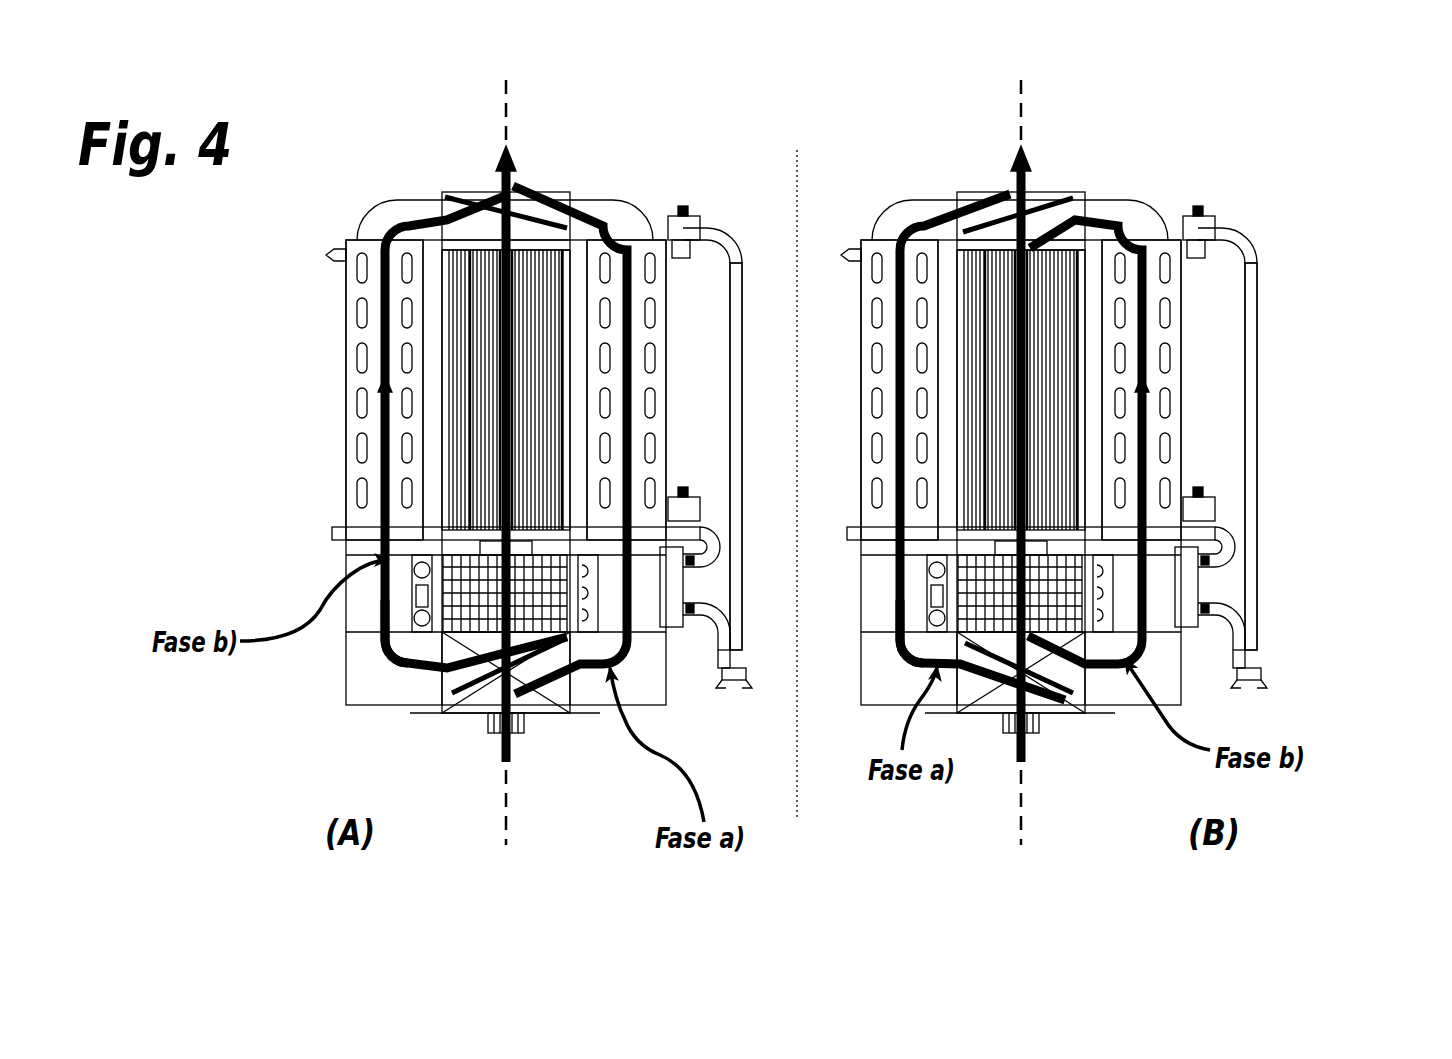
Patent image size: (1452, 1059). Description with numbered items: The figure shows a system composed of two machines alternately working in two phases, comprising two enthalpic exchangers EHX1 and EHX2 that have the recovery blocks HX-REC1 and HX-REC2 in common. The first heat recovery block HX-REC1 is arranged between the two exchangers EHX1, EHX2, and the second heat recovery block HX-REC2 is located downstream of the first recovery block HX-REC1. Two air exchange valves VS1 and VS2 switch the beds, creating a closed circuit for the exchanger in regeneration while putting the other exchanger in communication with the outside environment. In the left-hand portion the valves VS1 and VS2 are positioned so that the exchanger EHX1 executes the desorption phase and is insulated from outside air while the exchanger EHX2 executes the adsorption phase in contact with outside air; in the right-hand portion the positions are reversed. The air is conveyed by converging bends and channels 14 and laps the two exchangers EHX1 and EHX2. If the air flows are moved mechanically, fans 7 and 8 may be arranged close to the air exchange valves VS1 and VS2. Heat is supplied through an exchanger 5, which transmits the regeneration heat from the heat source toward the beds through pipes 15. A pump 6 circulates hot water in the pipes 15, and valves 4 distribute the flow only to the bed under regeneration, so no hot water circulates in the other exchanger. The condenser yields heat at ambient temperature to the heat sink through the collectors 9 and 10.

The valves 4 is at (704, 226).
The exchanger 5 is at (668, 580).
The pump 6 is at (733, 663).
The fan 7 is at (482, 546).
The fan 8 is at (522, 732).
The collector 9 is at (670, 593).
The collector 10 is at (665, 633).
The converging bends and channels 14 is at (415, 208).
The pipes 15 is at (742, 390).
The air exchange valve VS1 is at (500, 208).
The air exchange valve VS2 is at (482, 692).
The enthalpic exchanger EHX1 is at (374, 258).
The enthalpic exchanger EHX2 is at (641, 262).
The first heat recovery block HX-REC1 is at (470, 398).
The second heat recovery block HX-REC2 is at (476, 601).